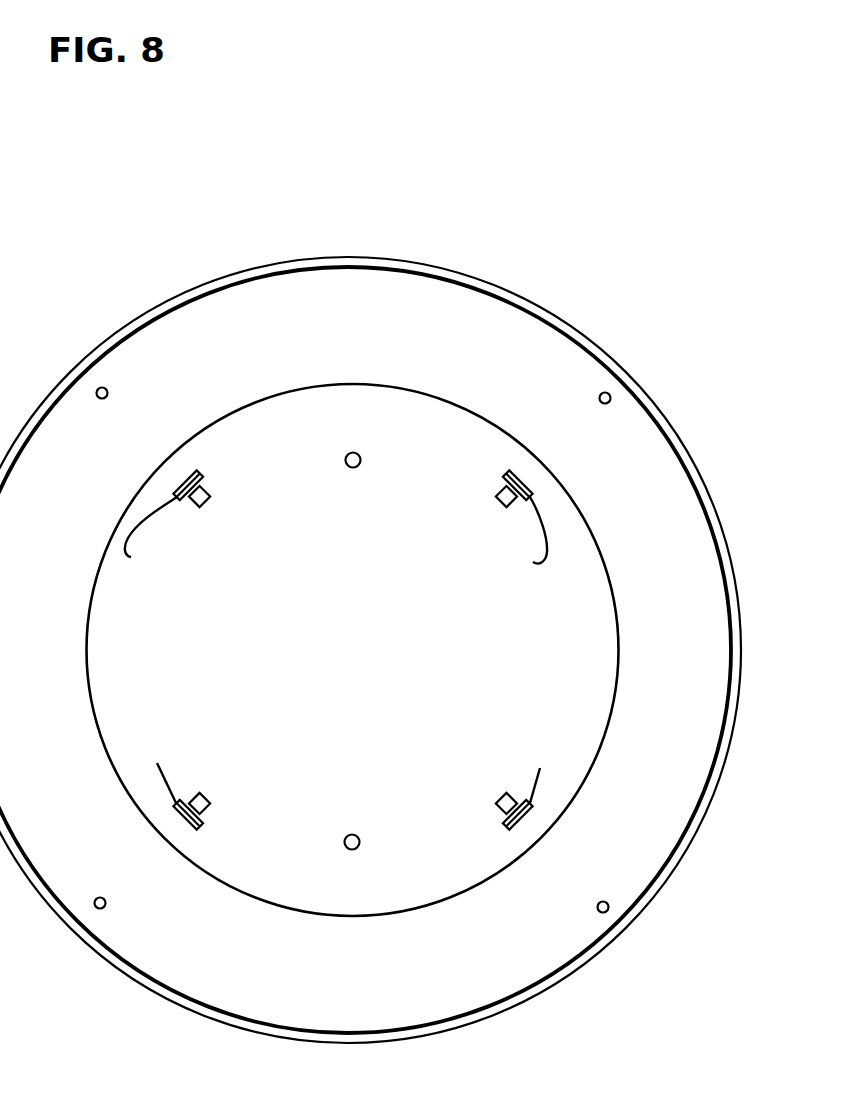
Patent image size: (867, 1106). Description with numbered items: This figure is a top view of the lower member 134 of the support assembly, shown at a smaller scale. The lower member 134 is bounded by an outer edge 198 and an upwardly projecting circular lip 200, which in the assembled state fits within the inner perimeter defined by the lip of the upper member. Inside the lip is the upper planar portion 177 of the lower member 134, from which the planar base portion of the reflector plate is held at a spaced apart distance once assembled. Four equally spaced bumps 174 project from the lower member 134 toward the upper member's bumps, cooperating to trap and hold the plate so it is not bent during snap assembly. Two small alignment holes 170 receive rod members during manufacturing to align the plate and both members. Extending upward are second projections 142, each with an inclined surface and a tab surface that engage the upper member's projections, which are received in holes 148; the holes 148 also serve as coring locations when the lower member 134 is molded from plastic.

The lower member 134 is at (529, 270).
The outer edge 198 is at (618, 367).
The circular lip 200 is at (647, 397).
The upper planar portion 177 is at (386, 642).
The bumps 174 is at (108, 390).
The alignment holes 170 is at (345, 460).
The holes 148 is at (212, 496).
The second projections 142 is at (357, 650).